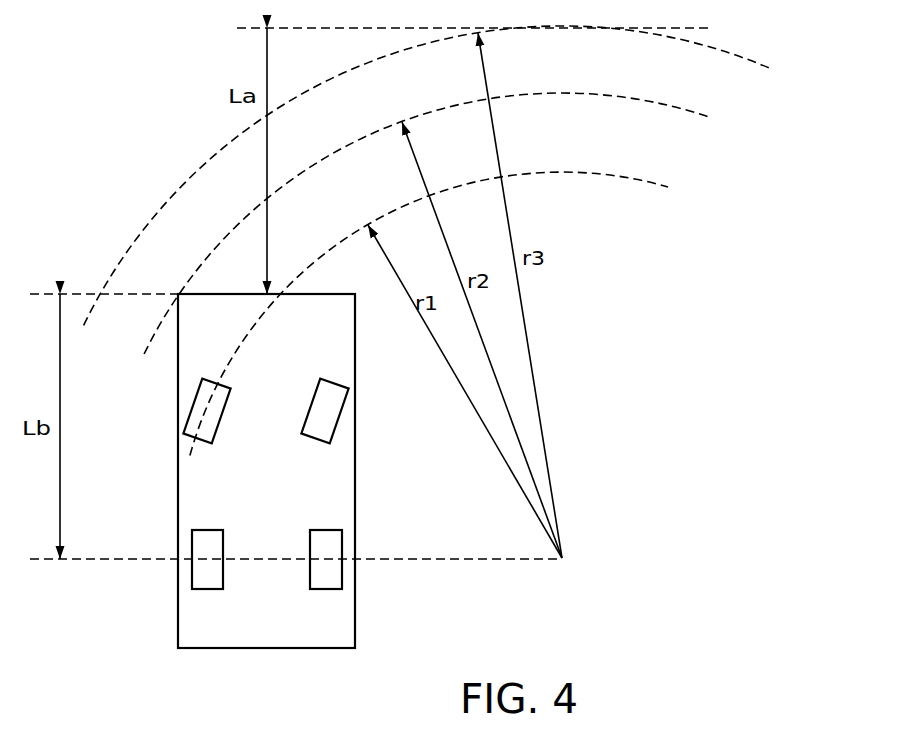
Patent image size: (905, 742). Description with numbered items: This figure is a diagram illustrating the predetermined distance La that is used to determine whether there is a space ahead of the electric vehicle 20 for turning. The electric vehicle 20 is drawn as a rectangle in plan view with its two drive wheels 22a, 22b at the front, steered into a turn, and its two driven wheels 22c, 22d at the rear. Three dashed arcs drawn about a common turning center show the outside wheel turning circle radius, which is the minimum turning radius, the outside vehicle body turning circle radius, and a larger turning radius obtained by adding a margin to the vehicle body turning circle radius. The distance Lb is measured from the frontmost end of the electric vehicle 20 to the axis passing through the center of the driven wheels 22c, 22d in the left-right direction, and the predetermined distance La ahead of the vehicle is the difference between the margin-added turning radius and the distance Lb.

The electric vehicle 20 is at (266, 648).
The drive wheel 22a is at (195, 405).
The drive wheel 22b is at (342, 412).
The driven wheel 22c is at (192, 545).
The driven wheel 22d is at (342, 543).